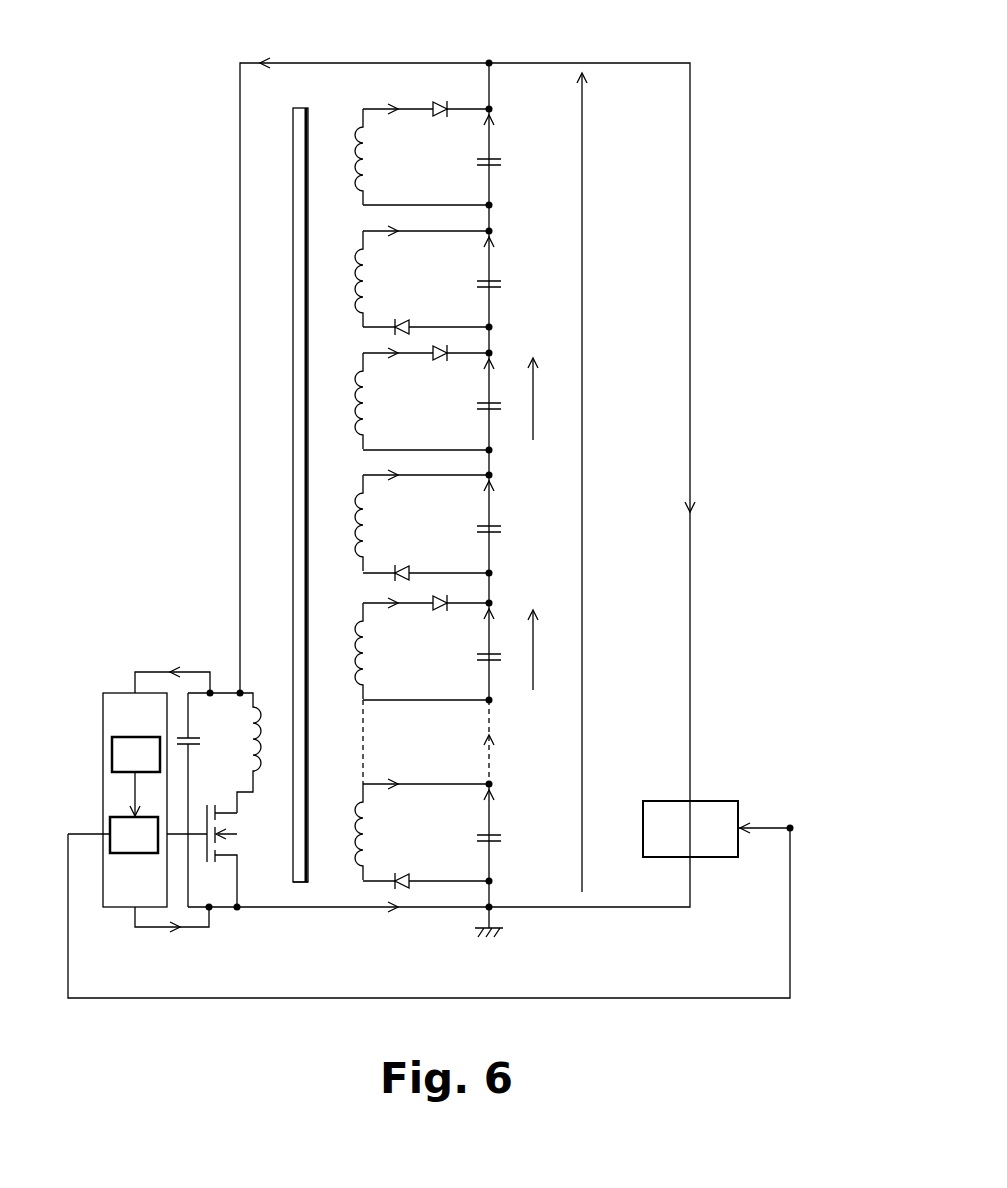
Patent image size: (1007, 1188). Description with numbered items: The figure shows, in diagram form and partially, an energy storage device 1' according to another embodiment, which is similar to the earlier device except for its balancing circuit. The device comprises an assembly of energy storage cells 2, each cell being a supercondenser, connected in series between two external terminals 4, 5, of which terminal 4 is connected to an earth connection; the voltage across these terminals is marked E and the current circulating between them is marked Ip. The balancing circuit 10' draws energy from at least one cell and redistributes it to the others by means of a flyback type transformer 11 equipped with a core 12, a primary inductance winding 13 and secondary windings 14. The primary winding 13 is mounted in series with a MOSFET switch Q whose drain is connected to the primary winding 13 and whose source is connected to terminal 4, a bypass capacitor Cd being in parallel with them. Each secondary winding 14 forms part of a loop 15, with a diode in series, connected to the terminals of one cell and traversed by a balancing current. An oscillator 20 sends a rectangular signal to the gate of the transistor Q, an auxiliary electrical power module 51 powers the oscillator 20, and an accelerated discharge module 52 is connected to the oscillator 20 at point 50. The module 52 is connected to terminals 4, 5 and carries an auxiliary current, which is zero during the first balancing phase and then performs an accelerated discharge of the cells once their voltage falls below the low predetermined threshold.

The energy storage device 1' is at (486, 471).
The assembly of energy storage cells 2 is at (552, 222).
The external terminal 4 is at (493, 905).
The external terminal 5 is at (489, 62).
The balancing circuit 10' is at (296, 758).
The flyback type transformer 11 is at (301, 886).
The core 12 is at (292, 562).
The primary inductance winding 13 is at (267, 710).
The secondary winding 14 is at (360, 131).
The loop 15 is at (418, 191).
The oscillator 20 is at (116, 815).
The point 50 is at (790, 826).
The auxiliary electrical power module 51 is at (112, 742).
The accelerated discharge module 52 is at (717, 801).